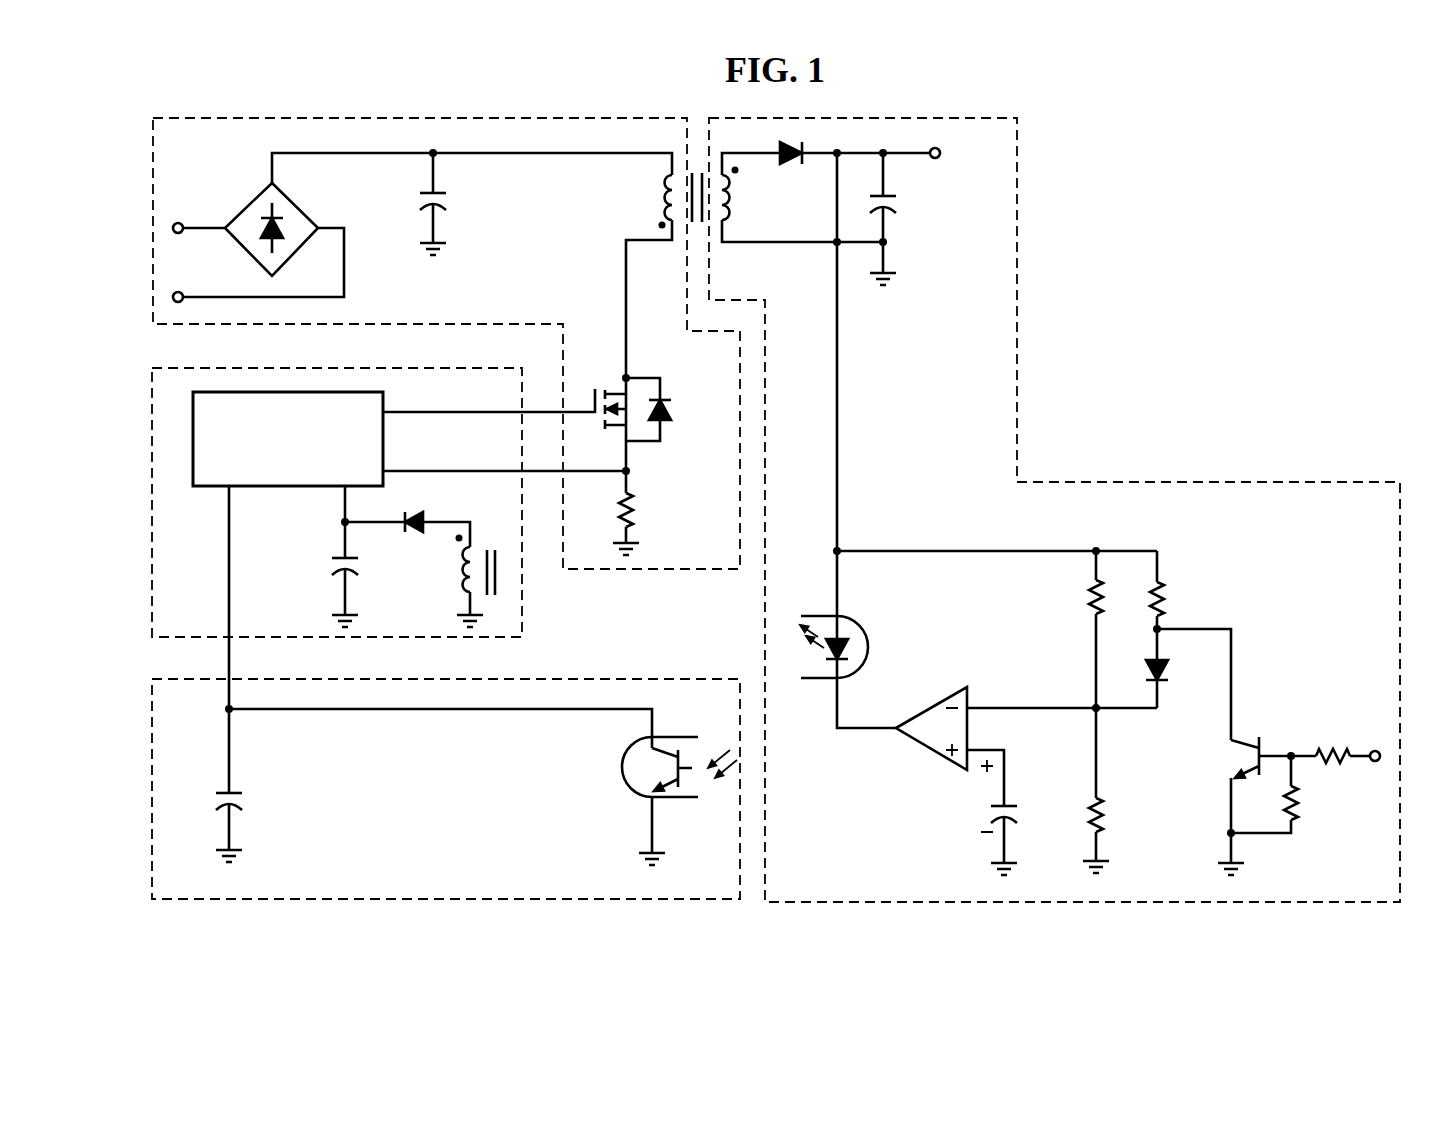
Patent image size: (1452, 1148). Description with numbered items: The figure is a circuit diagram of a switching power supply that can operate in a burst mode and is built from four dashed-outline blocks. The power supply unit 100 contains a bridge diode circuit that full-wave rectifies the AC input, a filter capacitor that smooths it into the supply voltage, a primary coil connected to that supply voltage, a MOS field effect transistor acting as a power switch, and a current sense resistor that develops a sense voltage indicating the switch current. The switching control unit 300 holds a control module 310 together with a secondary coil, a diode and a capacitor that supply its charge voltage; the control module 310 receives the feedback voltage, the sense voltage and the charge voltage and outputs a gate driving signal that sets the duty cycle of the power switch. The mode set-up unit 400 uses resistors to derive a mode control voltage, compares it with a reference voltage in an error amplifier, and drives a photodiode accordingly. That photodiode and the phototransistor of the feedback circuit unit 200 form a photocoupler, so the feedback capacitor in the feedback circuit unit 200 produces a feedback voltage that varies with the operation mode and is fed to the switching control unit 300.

The power supply unit 100 is at (652, 570).
The feedback circuit unit 200 is at (445, 678).
The switching control unit 300 is at (447, 366).
The control module 310 is at (288, 439).
The mode set-up unit 400 is at (1198, 485).